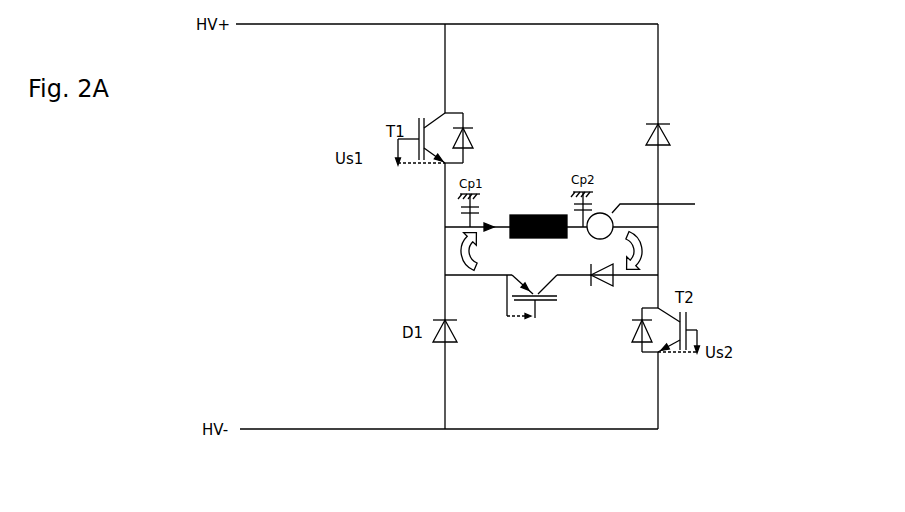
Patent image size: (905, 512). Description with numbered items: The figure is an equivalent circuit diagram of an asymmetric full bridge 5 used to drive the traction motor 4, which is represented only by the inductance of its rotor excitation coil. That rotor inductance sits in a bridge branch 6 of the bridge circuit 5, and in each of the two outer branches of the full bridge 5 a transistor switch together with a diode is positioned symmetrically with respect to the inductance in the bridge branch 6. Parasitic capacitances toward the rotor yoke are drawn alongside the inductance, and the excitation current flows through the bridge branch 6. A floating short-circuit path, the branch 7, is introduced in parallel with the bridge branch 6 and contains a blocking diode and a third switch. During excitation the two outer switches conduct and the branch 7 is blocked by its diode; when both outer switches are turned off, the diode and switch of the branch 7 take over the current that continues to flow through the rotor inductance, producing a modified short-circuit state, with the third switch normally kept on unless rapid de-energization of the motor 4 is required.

The electric drive motor 4 is at (556, 215).
The bridge circuit 5 is at (648, 64).
The bridge branch 6 is at (612, 195).
The short-circuit branch 7 is at (573, 297).